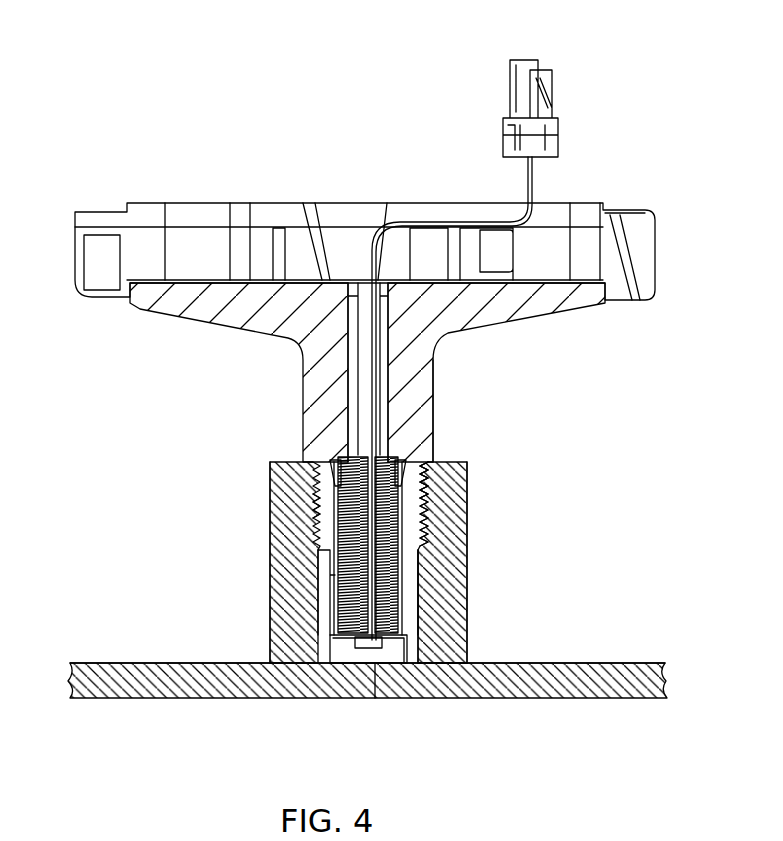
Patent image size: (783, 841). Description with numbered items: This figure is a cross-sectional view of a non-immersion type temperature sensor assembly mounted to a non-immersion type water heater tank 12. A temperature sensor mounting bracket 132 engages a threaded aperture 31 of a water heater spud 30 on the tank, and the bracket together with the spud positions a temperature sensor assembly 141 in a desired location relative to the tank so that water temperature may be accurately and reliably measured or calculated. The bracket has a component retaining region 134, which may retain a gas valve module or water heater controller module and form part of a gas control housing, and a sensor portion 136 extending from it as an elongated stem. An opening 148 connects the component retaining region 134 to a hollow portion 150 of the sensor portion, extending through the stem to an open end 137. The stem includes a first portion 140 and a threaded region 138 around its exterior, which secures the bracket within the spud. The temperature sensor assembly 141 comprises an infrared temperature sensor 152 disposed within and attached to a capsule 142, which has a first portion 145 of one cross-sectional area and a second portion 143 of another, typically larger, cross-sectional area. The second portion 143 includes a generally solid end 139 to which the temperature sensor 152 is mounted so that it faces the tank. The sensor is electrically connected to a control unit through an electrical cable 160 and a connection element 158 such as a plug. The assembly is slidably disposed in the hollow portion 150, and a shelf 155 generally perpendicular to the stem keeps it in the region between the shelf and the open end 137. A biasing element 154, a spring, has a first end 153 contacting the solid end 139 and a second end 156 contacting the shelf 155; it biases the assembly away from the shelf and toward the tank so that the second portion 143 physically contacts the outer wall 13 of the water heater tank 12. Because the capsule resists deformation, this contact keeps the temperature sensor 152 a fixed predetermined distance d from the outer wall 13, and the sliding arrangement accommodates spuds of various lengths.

The water heater tank 12 is at (535, 690).
The outer wall 13 is at (598, 662).
The water heater spud 30 is at (462, 552).
The threaded aperture 31 is at (425, 535).
The temperature sensor mounting bracket 132 is at (670, 80).
The component retaining region 134 is at (205, 236).
The sensor portion 136 is at (258, 398).
The open end 137 is at (332, 574).
The threaded region 138 is at (313, 493).
The solid end 139 is at (402, 650).
The first portion 140 is at (434, 409).
The temperature sensor assembly 141 is at (330, 622).
The capsule 142 is at (400, 606).
The second portion 143 is at (330, 650).
The first portion 145 is at (350, 590).
The opening 148 is at (362, 276).
The hollow portion 150 is at (400, 522).
The temperature sensor 152 is at (363, 650).
The first end 153 is at (410, 578).
The biasing element 154 is at (330, 534).
The shelf 155 is at (336, 460).
The second end 156 is at (400, 460).
The connection element 158 is at (560, 133).
The electrical cable 160 is at (347, 608).
The predetermined distance d is at (375, 668).